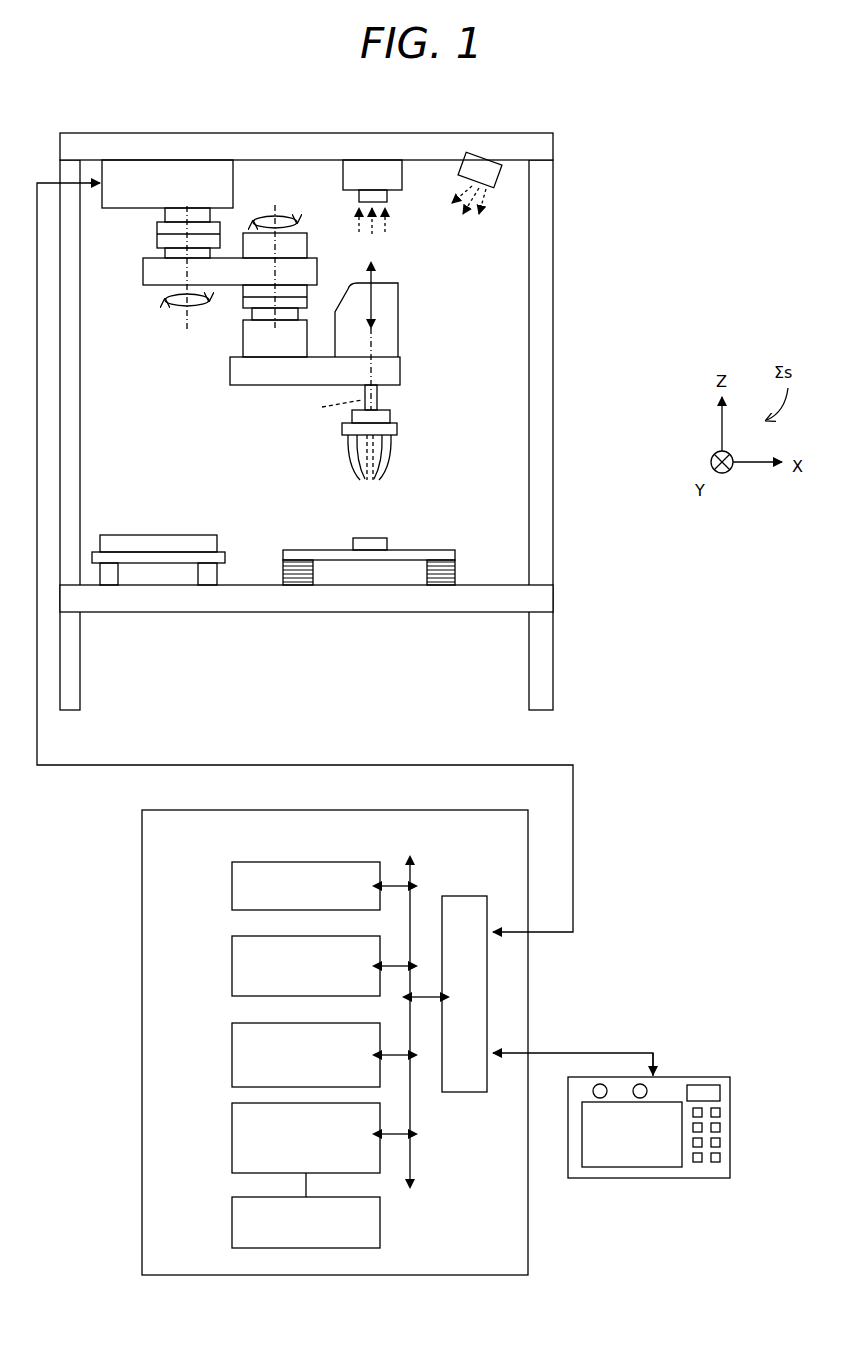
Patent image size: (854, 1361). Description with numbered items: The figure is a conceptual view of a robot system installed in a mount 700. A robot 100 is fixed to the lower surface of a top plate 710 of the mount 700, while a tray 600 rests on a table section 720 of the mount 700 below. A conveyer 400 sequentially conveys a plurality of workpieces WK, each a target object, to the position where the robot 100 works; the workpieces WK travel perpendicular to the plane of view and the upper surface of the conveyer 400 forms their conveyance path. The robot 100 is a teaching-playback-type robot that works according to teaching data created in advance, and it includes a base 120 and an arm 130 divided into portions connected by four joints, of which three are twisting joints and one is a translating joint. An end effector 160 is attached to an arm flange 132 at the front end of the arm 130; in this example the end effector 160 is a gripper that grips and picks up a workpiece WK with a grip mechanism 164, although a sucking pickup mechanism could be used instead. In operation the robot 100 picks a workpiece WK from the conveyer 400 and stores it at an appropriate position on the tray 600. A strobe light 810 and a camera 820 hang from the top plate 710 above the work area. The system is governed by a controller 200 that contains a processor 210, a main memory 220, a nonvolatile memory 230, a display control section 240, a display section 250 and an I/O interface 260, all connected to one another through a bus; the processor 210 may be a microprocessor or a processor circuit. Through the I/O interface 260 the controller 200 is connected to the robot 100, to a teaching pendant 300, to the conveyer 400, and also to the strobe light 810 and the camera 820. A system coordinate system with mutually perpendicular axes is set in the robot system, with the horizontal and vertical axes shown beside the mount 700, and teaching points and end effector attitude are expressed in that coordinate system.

The robot 100 is at (277, 320).
The base 120 is at (117, 208).
The arm 130 is at (214, 379).
The arm flange 132 is at (392, 416).
The end effector 160 is at (320, 451).
The grip mechanism 164 is at (343, 430).
The controller 200 is at (335, 1028).
The processor 210 is at (232, 882).
The main memory 220 is at (232, 966).
The nonvolatile memory 230 is at (232, 1055).
The display control section 240 is at (232, 1134).
The display section 250 is at (232, 1219).
The I/O interface 260 is at (460, 896).
The teaching pendant 300 is at (672, 1077).
The conveyer 400 is at (330, 553).
The tray 600 is at (170, 535).
The mount 700 is at (347, 411).
The top plate 710 is at (272, 133).
The table section 720 is at (553, 603).
The strobe light 810 is at (482, 170).
The camera 820 is at (376, 172).
The workpiece WK is at (385, 540).